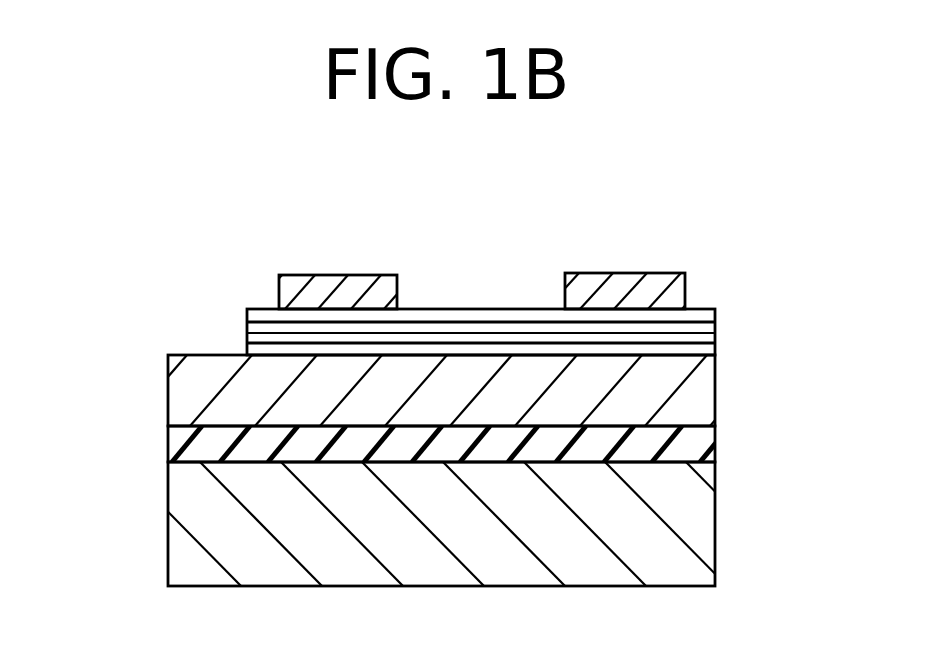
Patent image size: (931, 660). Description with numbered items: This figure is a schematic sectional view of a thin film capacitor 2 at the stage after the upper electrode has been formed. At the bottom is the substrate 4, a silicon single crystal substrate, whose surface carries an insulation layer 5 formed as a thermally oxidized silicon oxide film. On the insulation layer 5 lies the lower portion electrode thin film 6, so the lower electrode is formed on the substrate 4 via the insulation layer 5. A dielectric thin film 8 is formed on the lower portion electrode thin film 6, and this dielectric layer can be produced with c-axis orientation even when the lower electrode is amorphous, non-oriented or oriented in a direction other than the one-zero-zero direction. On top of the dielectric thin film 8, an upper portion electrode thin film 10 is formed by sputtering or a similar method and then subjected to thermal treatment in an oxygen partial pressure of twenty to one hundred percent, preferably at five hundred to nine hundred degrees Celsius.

The thin film capacitor 2 is at (152, 205).
The substrate 4 is at (700, 518).
The insulation layer 5 is at (700, 444).
The lower portion electrode thin film 6 is at (703, 390).
The dielectric thin film 8 is at (700, 322).
The upper portion electrode thin film 10 is at (345, 275).